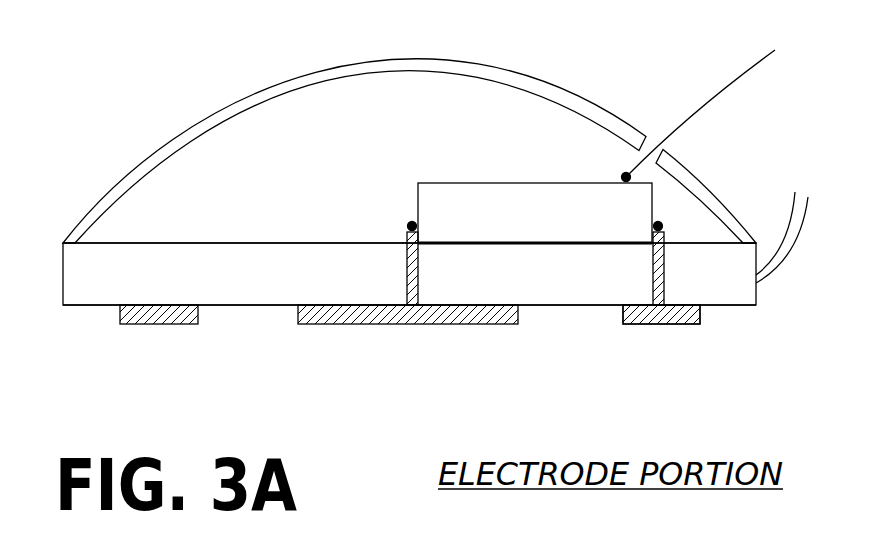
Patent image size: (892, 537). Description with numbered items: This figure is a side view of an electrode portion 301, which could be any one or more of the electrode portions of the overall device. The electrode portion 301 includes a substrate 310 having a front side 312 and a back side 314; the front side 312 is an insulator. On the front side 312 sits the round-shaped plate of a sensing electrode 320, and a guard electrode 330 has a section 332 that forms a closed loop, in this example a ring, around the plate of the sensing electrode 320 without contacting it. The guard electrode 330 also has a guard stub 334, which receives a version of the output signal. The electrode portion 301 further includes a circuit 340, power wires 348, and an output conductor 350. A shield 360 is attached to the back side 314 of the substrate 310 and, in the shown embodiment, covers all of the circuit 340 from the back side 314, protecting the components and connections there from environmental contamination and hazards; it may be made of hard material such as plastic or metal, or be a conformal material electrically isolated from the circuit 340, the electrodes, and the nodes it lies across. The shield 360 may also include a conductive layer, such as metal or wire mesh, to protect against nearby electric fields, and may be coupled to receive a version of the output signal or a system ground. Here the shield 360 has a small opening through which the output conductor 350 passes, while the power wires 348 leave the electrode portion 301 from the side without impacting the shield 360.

The electrode portion 301 is at (92, 80).
The substrate 310 is at (292, 287).
The front side 312 is at (248, 307).
The back side 314 is at (245, 243).
The sensing electrode 320 is at (362, 325).
The guard electrode 330 is at (678, 325).
The section 332 is at (135, 325).
The guard stub 334 is at (667, 282).
The circuit 340 is at (517, 224).
The power wires 348 is at (801, 223).
The output conductor 350 is at (725, 78).
The shield 360 is at (283, 80).